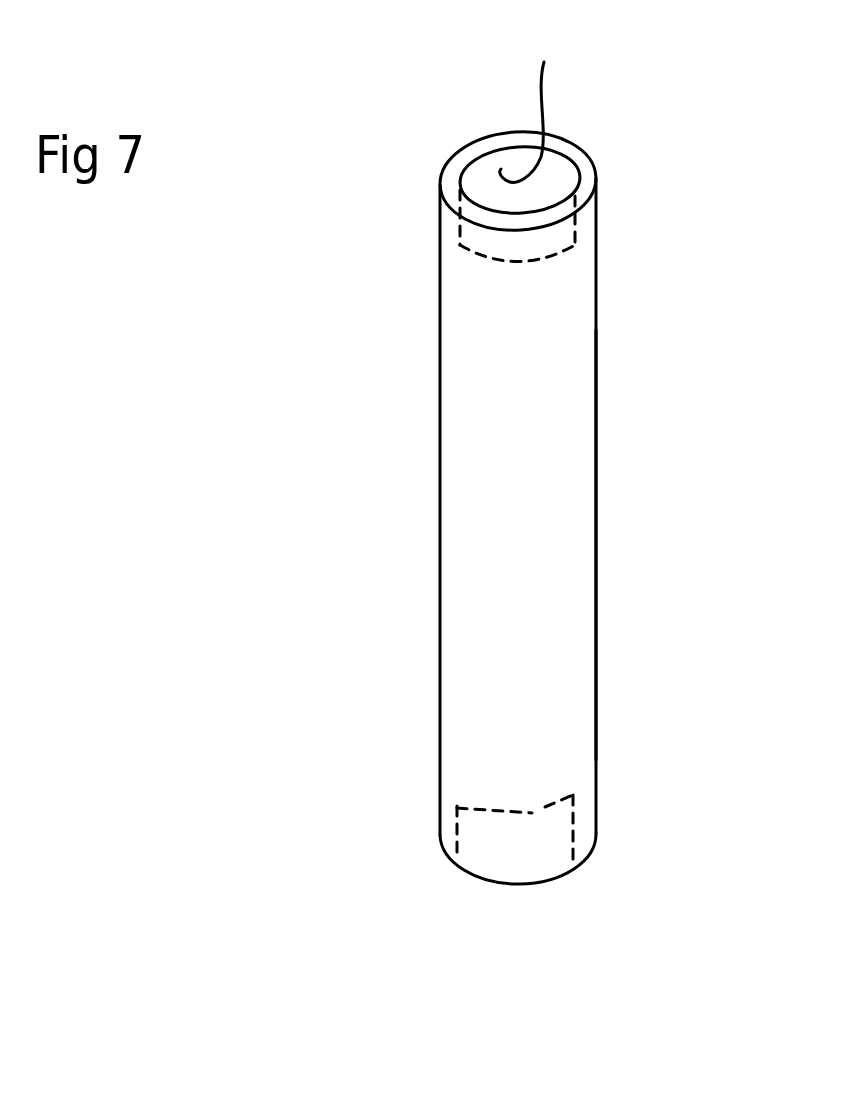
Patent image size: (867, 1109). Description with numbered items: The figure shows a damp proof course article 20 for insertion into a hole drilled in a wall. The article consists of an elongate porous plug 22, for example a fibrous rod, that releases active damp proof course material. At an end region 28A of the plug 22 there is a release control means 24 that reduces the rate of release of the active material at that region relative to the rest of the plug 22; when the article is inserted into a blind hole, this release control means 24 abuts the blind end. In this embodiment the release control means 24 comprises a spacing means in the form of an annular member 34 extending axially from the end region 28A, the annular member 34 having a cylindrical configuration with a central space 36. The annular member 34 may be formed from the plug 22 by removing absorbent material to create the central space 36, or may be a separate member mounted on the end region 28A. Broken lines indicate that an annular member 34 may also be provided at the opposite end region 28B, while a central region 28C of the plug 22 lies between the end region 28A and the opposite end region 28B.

The damp proof course article 20 is at (437, 537).
The plug 22 is at (567, 547).
The release control means 24 is at (578, 162).
The annular member 34 is at (492, 135).
The central space 36 is at (532, 98).
The end region 28A is at (518, 268).
The opposite end region 28B is at (533, 805).
The central region 28C is at (562, 463).